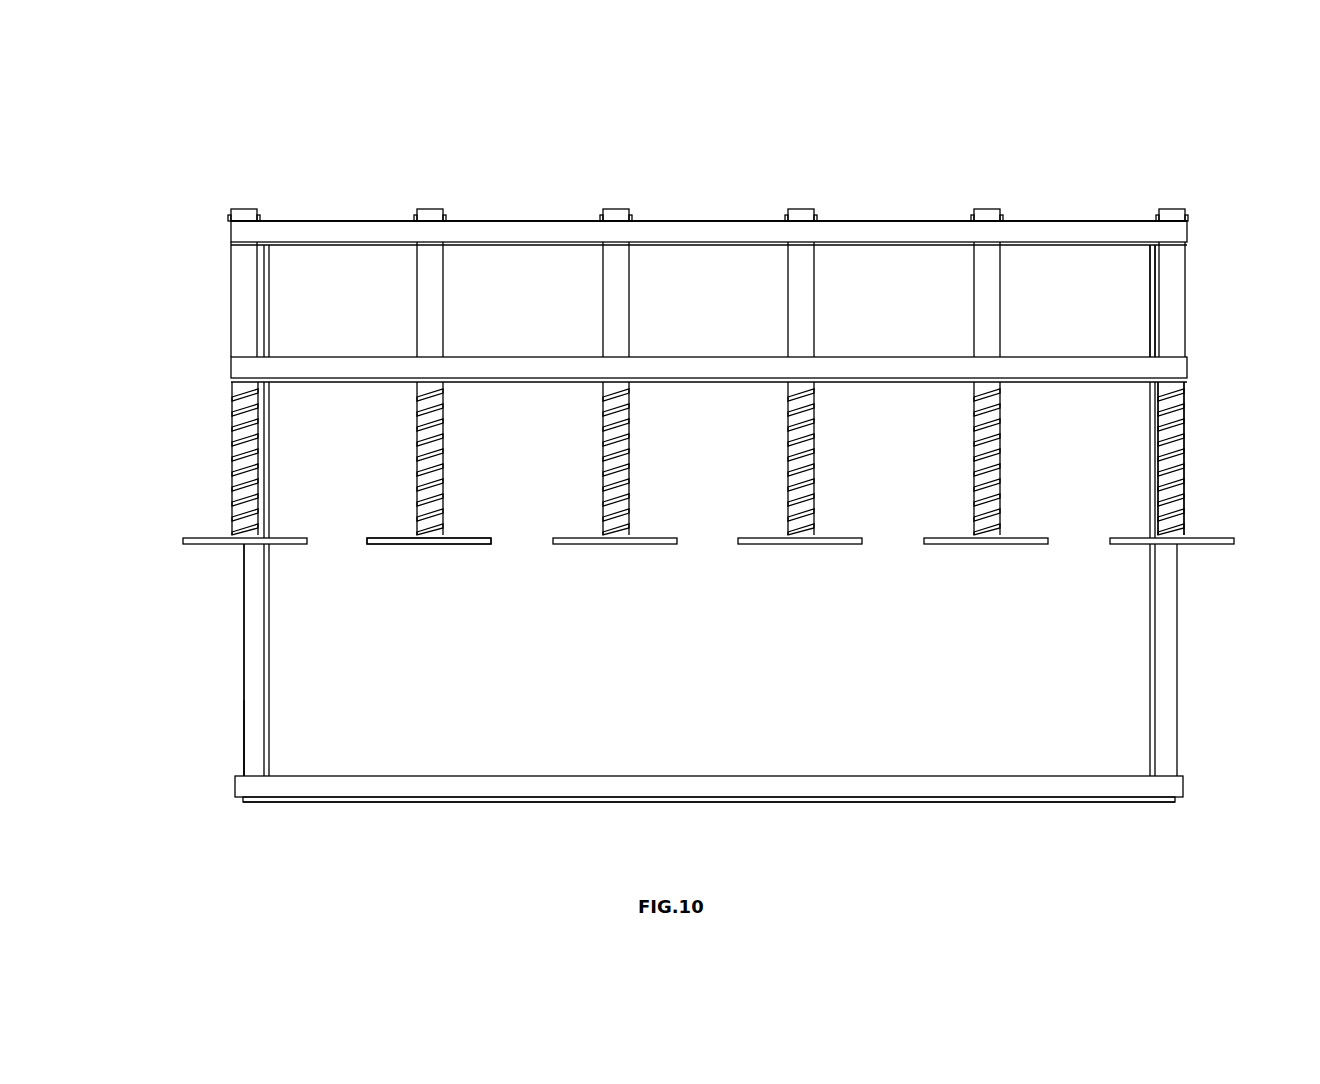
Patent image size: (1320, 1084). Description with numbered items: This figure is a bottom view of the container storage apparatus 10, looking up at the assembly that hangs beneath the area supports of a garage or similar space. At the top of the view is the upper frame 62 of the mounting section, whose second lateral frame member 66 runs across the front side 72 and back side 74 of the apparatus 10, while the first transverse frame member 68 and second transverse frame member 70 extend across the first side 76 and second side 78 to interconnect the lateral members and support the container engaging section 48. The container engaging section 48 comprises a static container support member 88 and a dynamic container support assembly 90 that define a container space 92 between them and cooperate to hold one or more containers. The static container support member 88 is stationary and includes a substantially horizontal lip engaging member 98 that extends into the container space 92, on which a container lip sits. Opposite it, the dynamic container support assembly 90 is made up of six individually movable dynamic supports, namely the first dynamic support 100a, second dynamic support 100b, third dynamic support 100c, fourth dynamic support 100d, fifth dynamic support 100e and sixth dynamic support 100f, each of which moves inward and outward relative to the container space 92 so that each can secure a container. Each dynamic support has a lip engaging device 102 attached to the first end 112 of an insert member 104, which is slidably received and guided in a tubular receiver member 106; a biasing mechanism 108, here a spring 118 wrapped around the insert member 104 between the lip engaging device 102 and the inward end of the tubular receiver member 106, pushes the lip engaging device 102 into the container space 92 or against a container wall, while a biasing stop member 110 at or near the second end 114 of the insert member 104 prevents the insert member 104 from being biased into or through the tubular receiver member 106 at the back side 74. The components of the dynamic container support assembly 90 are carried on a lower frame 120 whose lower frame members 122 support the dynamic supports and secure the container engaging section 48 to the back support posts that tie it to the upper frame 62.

The apparatus 10 is at (1052, 138).
The container engaging section 48 is at (1213, 346).
The upper frame 62 is at (248, 732).
The second lateral frame member 66 is at (308, 229).
The first transverse frame member 68 is at (1165, 754).
The second transverse frame member 70 is at (253, 681).
The front side 72 is at (959, 818).
The back side 74 is at (704, 206).
The first side 76 is at (1214, 448).
The second side 78 is at (218, 608).
The static container support member 88 is at (364, 794).
The dynamic container support assembly 90 is at (214, 461).
The container space 92 is at (1018, 690).
The lip engaging member 98 is at (418, 784).
The first dynamic support 100a is at (1122, 563).
The second dynamic support 100b is at (971, 563).
The third dynamic support 100c is at (801, 563).
The fourth dynamic support 100d is at (620, 563).
The fifth dynamic support 100e is at (455, 563).
The sixth dynamic support 100f is at (286, 563).
The lip engaging device 102 is at (478, 537).
The insert member 104 is at (801, 450).
The tubular receiver member 106 is at (990, 300).
The biasing mechanism 108 is at (406, 484).
The biasing stop member 110 is at (815, 218).
The first end 112 is at (1194, 524).
The second end 114 is at (1200, 213).
The spring 118 is at (628, 464).
The lower frame 120 is at (479, 222).
The lower frame members 122 is at (574, 230).